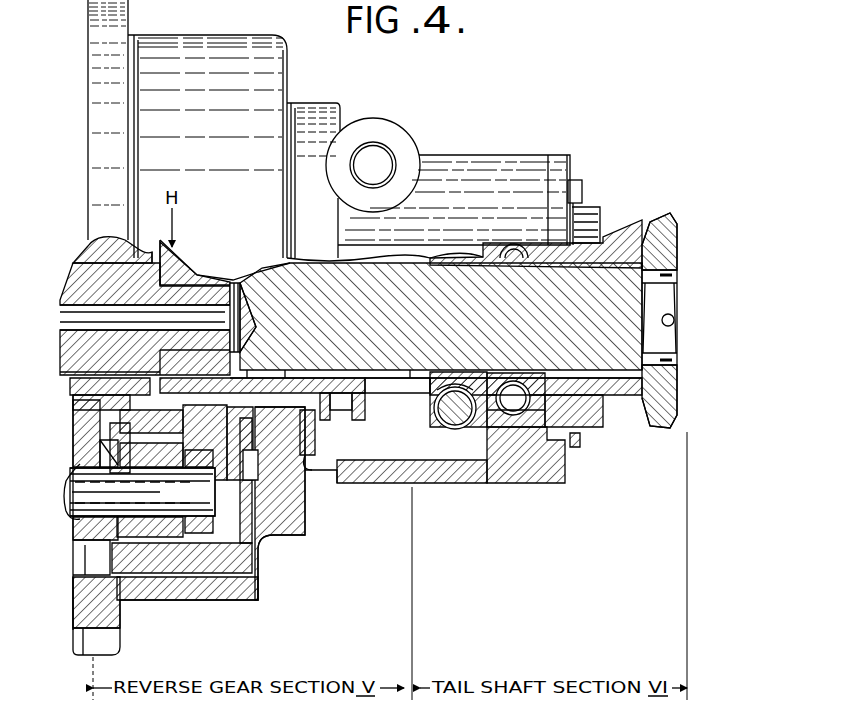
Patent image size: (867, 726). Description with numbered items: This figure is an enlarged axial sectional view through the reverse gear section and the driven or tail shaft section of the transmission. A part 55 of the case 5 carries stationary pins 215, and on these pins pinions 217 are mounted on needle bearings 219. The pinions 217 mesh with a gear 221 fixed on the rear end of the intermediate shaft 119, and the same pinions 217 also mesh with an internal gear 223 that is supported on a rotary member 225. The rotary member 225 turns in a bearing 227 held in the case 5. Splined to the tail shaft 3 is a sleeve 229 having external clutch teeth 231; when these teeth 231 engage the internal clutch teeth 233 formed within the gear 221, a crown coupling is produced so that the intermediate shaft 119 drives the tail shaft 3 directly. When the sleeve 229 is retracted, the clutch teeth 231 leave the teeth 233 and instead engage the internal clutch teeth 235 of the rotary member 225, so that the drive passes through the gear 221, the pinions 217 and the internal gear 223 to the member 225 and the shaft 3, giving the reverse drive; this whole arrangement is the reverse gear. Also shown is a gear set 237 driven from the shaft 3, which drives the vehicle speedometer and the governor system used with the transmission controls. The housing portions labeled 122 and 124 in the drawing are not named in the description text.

The shaft 3 is at (399, 329).
The case 5 is at (262, 593).
The part of case 55 is at (75, 535).
The intermediate shaft 119 is at (78, 286).
The bearing cap 122 is at (75, 397).
The bearing housing 124 is at (215, 275).
The stationary pins 215 is at (84, 477).
The pinions 217 is at (86, 440).
The needle bearings 219 is at (112, 458).
The gear 221 is at (172, 427).
The internal gear 223 is at (232, 573).
The rotary member 225 is at (248, 485).
The bearing 227 is at (315, 436).
The sleeve 229 is at (355, 393).
The external clutch teeth 231 is at (185, 398).
The internal clutch teeth 233 is at (178, 412).
The internal clutch teeth 235 is at (245, 392).
The gear set 237 is at (445, 408).